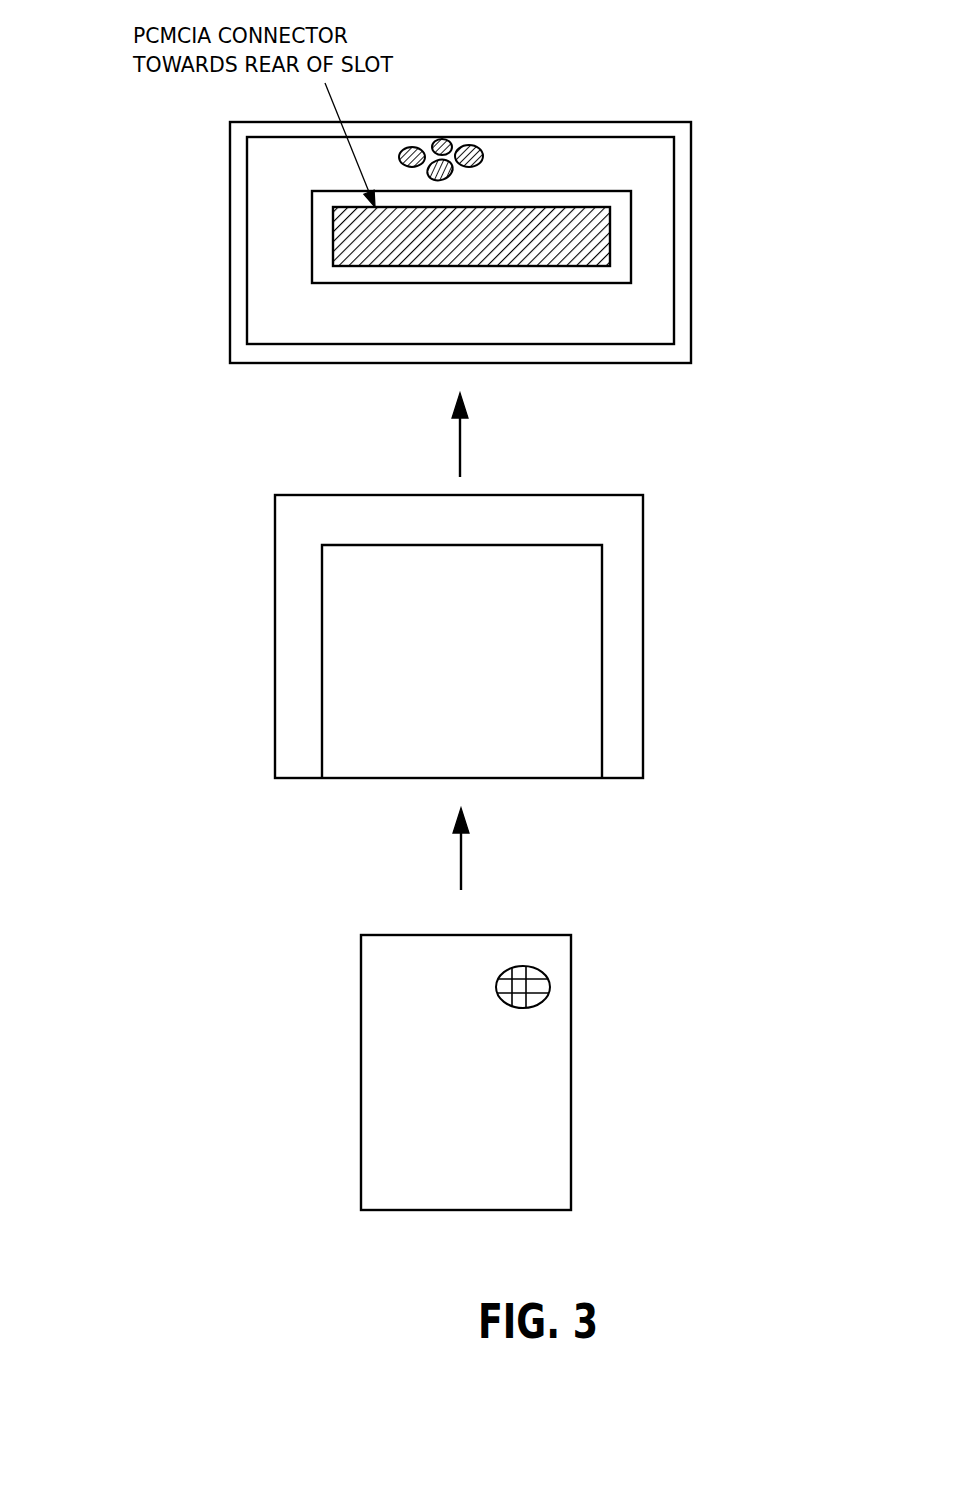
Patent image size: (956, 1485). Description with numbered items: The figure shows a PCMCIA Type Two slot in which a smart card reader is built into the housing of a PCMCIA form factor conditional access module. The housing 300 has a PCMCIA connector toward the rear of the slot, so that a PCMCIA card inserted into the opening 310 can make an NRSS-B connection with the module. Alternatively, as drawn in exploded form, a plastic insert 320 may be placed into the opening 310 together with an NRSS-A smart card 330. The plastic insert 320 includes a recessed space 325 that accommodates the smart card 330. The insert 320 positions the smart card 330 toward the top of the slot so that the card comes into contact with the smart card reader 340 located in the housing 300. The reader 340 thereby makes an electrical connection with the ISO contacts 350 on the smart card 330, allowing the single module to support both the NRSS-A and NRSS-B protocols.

The housing 300 is at (230, 245).
The opening 310 is at (595, 240).
The plastic insert 320 is at (643, 707).
The recessed space 325 is at (602, 642).
The smart card 330 is at (571, 1178).
The smart card reader 340 is at (473, 140).
The ISO contacts 350 is at (553, 989).